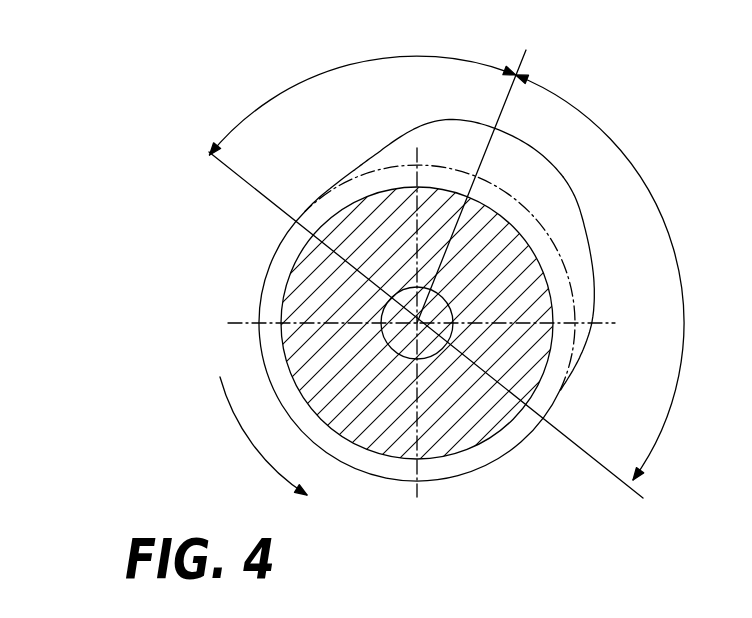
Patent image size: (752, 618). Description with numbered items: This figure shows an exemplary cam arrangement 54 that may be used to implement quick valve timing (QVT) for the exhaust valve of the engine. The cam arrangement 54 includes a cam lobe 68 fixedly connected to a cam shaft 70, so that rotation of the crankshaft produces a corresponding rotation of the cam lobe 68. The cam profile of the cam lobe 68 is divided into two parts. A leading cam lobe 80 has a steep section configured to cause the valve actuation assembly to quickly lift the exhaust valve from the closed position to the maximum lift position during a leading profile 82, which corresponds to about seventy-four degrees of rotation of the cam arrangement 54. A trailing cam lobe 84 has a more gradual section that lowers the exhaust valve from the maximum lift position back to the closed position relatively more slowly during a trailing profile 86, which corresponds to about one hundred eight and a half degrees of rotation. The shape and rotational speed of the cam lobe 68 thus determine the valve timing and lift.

The cam arrangement 54 is at (168, 302).
The cam lobe 68 is at (580, 373).
The cam shaft 70 is at (423, 352).
The leading cam lobe 80 is at (430, 137).
The leading profile 82 is at (338, 68).
The trailing cam lobe 84 is at (582, 255).
The trailing profile 86 is at (688, 323).